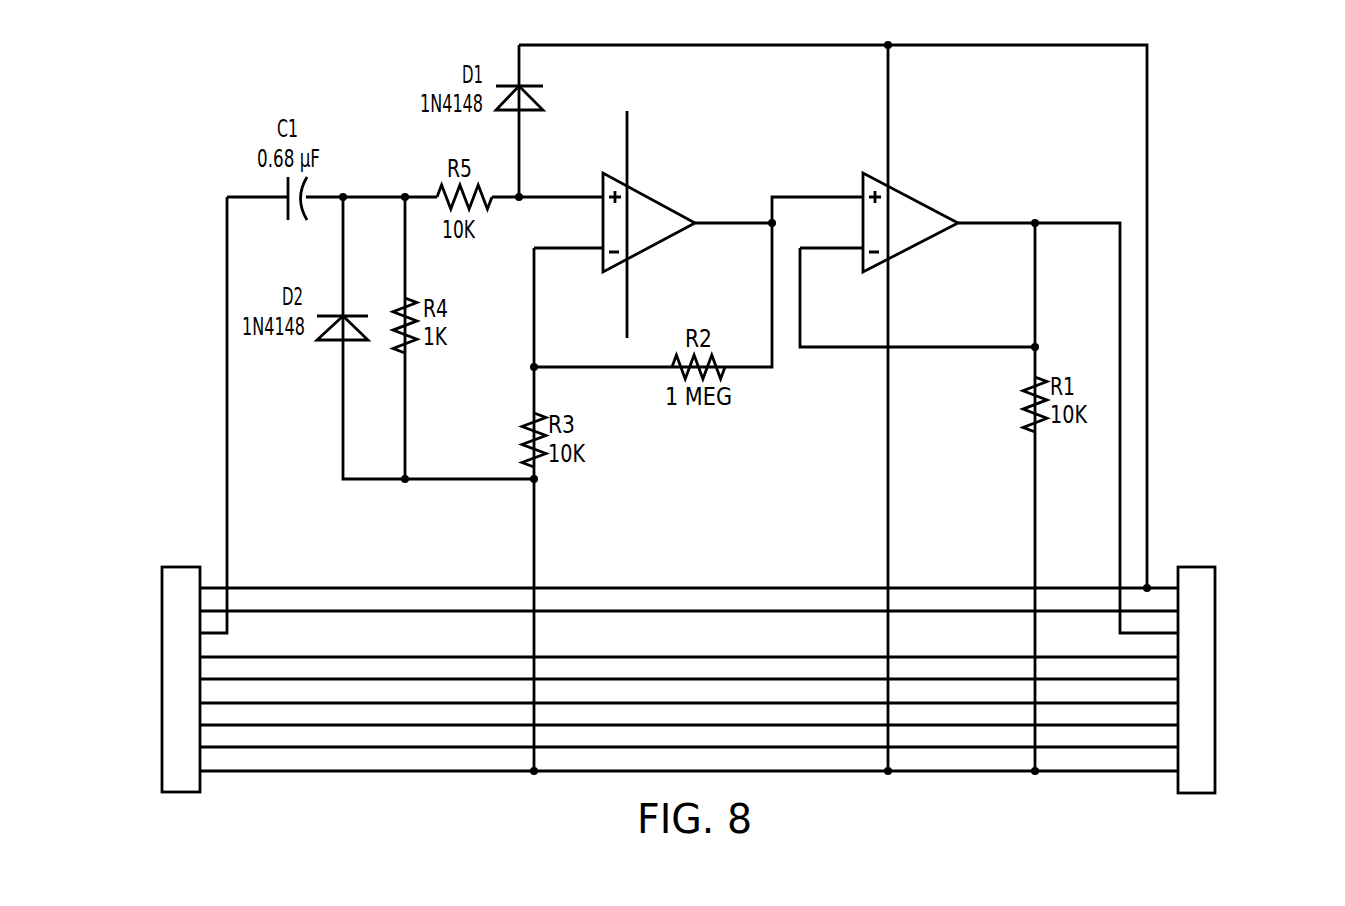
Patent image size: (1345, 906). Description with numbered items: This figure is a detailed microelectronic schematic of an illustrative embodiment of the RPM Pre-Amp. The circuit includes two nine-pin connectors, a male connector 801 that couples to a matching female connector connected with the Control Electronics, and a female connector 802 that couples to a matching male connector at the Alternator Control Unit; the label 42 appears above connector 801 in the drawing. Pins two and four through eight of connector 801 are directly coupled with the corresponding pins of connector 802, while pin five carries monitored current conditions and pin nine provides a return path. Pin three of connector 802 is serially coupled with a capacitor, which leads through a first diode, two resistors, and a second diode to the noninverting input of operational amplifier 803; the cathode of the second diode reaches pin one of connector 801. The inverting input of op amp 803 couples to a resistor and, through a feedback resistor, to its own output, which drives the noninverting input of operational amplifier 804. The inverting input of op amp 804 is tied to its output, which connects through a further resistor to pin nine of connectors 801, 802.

The connector 801 is at (1254, 681).
The connector 802 is at (121, 680).
The operational amplifier 803 is at (655, 245).
The operational amplifier 804 is at (932, 205).
The connector 42 is at (1196, 663).